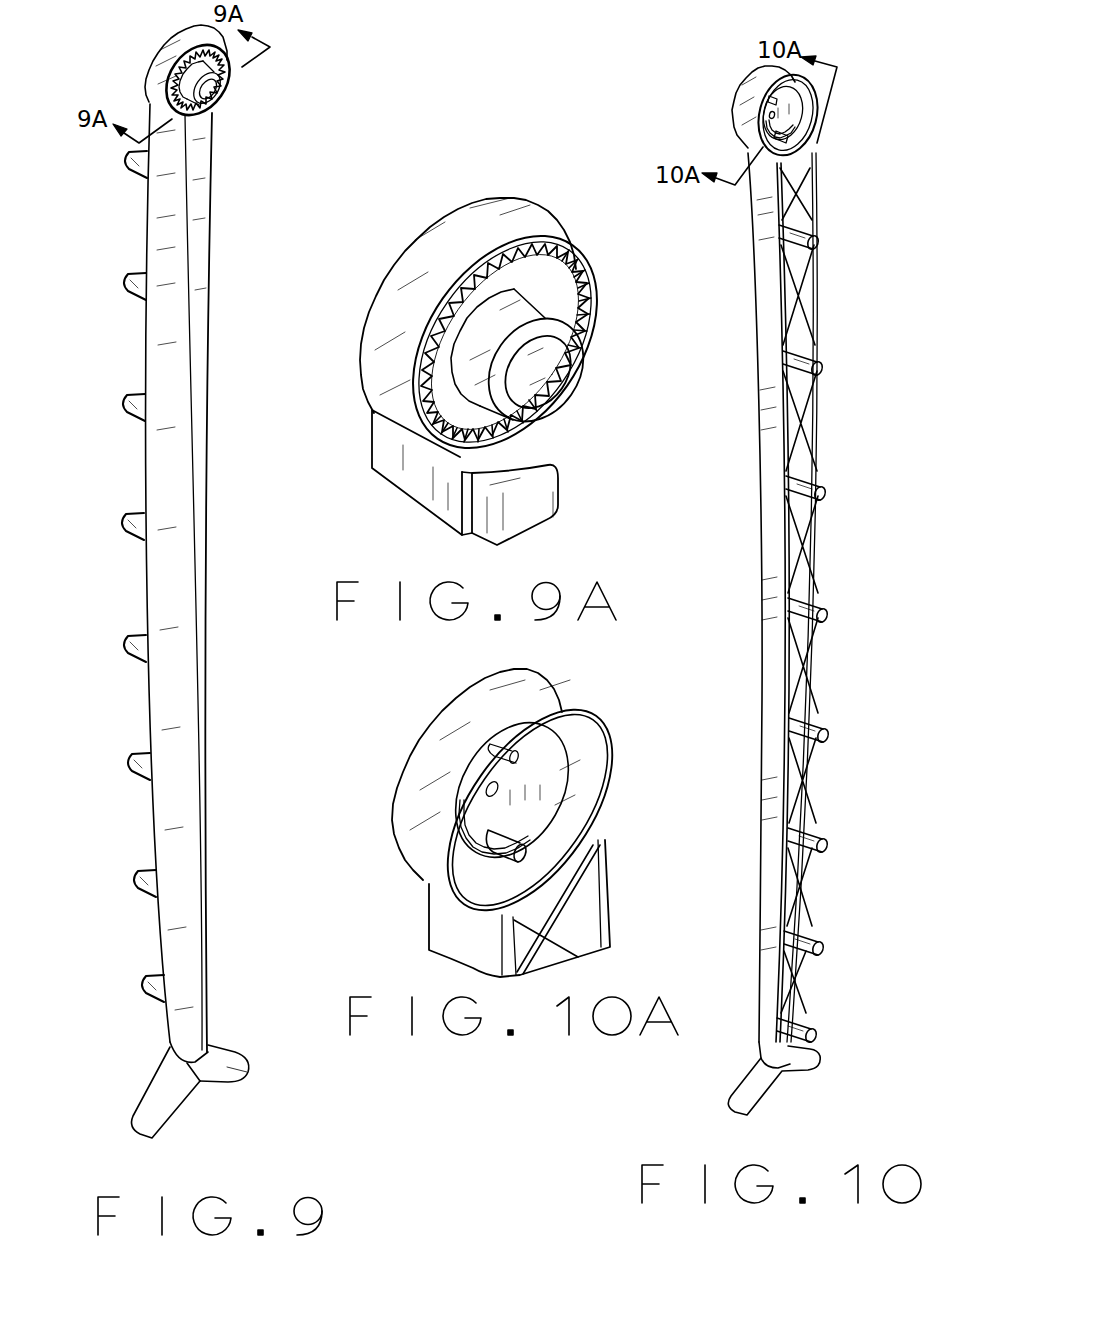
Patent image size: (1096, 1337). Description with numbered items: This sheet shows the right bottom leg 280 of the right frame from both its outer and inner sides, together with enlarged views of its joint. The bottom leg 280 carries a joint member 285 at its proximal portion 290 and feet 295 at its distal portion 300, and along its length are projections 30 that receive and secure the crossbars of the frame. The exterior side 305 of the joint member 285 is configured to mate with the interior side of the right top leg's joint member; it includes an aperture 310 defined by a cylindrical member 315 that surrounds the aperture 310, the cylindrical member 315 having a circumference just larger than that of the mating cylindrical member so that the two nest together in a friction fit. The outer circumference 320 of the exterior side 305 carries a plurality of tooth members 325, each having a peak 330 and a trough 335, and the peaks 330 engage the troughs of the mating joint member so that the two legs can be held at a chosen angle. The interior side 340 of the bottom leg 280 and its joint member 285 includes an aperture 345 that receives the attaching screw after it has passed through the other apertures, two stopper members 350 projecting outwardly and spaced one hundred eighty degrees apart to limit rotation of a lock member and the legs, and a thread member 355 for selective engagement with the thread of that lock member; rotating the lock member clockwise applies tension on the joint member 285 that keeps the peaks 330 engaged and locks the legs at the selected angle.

In FIG. 9, the projections 30 is at (133, 283).
In FIG. 10, the projections 30 is at (815, 365).
In FIG. 9, the bottom leg 280 is at (97, 547).
In FIG. 10, the bottom leg 280 is at (902, 530).
In FIG. 9, the joint member 285 is at (150, 26).
In FIG. 9A, the joint member 285 is at (510, 177).
In FIG. 10A, the joint member 285 is at (592, 680).
In FIG. 10, the joint member 285 is at (728, 70).
In FIG. 9, the proximal portion 290 is at (279, 79).
In FIG. 9, the feet 295 is at (227, 1068).
In FIG. 10, the feet 295 is at (808, 1060).
In FIG. 9, the distal portion 300 is at (121, 1083).
In FIG. 9, the exterior side 305 is at (178, 382).
In FIG. 9A, the exterior side 305 is at (435, 310).
In FIG. 9A, the aperture 310 is at (543, 373).
In FIG. 9A, the cylindrical member 315 is at (518, 313).
In FIG. 9A, the outer circumference 320 is at (457, 253).
In FIG. 9A, the tooth members 325 is at (589, 300).
In FIG. 9A, the peak 330 is at (433, 397).
In FIG. 9A, the trough 335 is at (517, 443).
In FIG. 10A, the interior side 340 is at (456, 814).
In FIG. 10, the interior side 340 is at (817, 527).
In FIG. 10A, the aperture 345 is at (490, 787).
In FIG. 10A, the stopper members 350 is at (510, 750).
In FIG. 10A, the thread member 355 is at (557, 730).